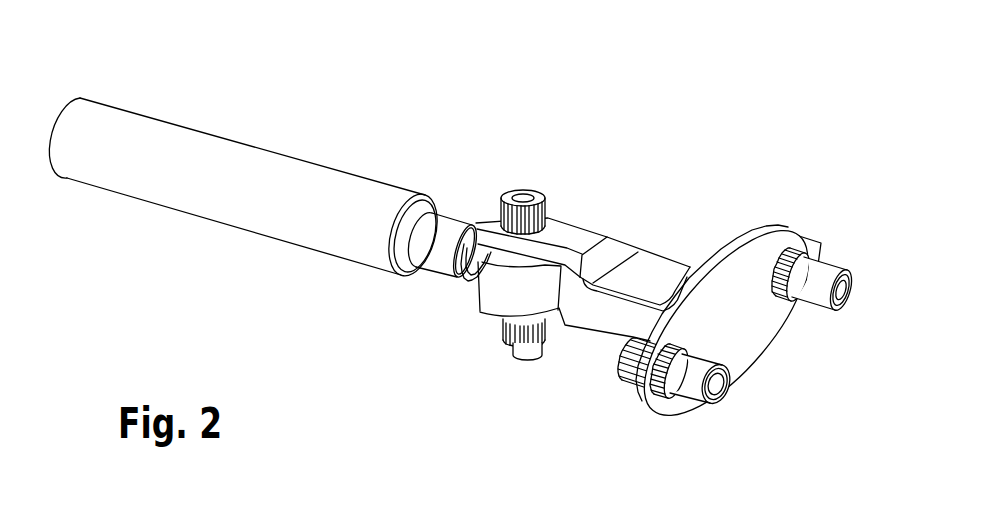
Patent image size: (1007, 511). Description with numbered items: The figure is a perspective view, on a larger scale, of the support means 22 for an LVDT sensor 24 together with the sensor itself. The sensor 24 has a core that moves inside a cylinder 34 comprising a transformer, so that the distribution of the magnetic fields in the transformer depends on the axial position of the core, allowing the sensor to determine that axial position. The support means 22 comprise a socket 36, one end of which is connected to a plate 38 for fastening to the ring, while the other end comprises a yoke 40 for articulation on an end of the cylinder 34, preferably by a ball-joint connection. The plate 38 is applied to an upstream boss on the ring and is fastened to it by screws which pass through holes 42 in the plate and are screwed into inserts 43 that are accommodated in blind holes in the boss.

The support means 22 is at (641, 299).
The LVDT sensor 24 is at (265, 170).
The cylinder 34 is at (257, 188).
The socket 36 is at (646, 268).
The plate 38 is at (757, 262).
The yoke 40 is at (570, 232).
The holes 42 is at (793, 262).
The inserts 43 is at (815, 298).